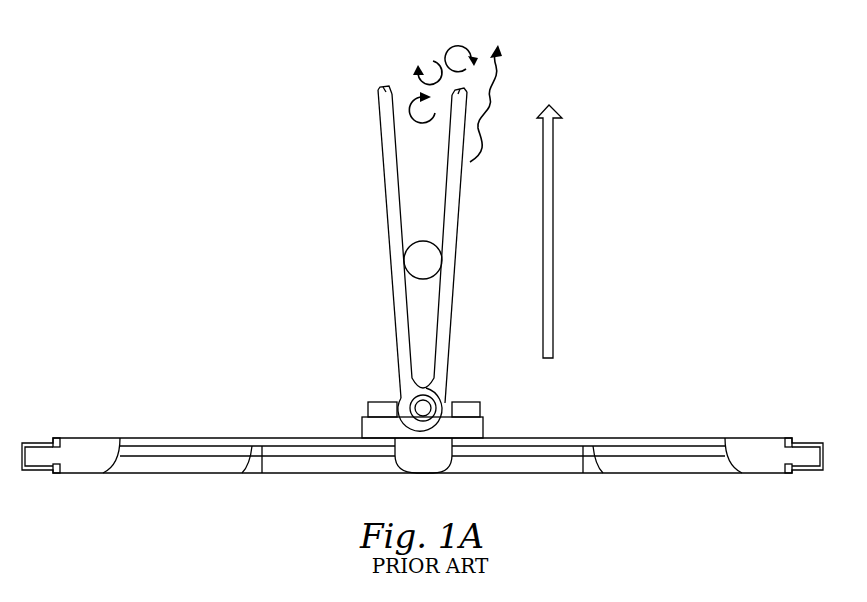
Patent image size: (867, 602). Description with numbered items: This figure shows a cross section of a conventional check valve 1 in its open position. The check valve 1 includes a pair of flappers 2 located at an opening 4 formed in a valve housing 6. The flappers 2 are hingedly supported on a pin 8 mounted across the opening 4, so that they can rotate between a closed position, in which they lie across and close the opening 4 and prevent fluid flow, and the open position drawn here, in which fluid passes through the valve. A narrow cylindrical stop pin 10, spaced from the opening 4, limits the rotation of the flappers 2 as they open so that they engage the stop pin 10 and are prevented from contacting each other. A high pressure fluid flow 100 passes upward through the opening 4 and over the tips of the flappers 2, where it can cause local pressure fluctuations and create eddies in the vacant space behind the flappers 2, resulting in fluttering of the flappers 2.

The check valve 1 is at (115, 228).
The flappers 2 is at (380, 127).
The opening 4 is at (608, 428).
The valve housing 6 is at (760, 438).
The pin 8 is at (408, 402).
The stop pin 10 is at (422, 240).
The fluid flow 100 is at (564, 231).